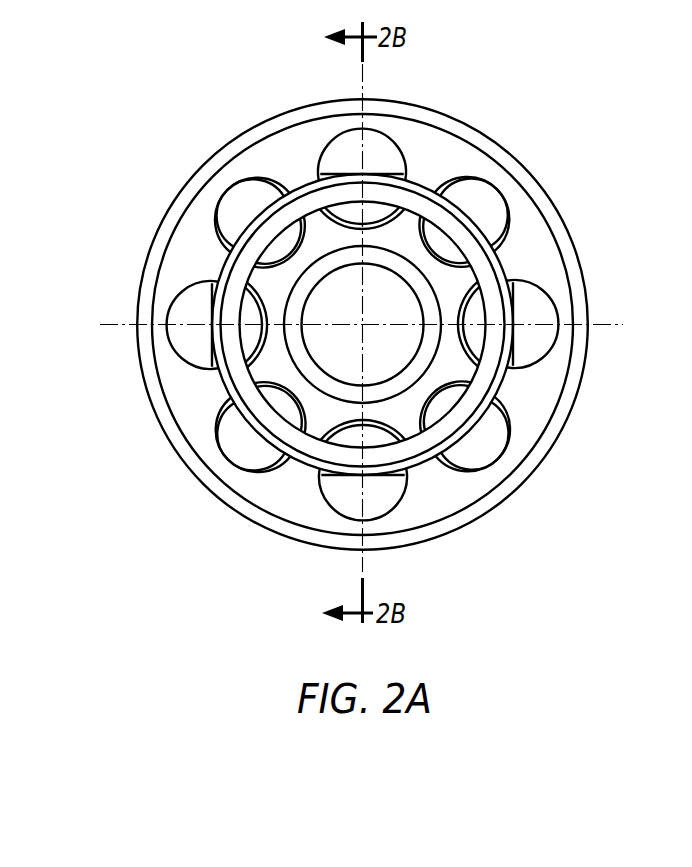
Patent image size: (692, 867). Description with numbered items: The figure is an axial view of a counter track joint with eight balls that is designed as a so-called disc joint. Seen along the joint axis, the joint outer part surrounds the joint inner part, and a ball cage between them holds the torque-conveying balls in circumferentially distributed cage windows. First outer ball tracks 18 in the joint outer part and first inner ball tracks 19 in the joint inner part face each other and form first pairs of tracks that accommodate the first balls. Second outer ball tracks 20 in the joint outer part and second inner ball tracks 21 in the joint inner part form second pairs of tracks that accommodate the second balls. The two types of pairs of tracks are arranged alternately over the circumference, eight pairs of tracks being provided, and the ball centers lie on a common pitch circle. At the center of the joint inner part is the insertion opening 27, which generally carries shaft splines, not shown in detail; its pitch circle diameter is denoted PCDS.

The first outer ball tracks 18 is at (378, 162).
The first inner ball tracks 19 is at (377, 231).
The second outer ball tracks 20 is at (222, 440).
The second inner ball tracks 21 is at (283, 405).
The insertion opening 27 is at (410, 283).